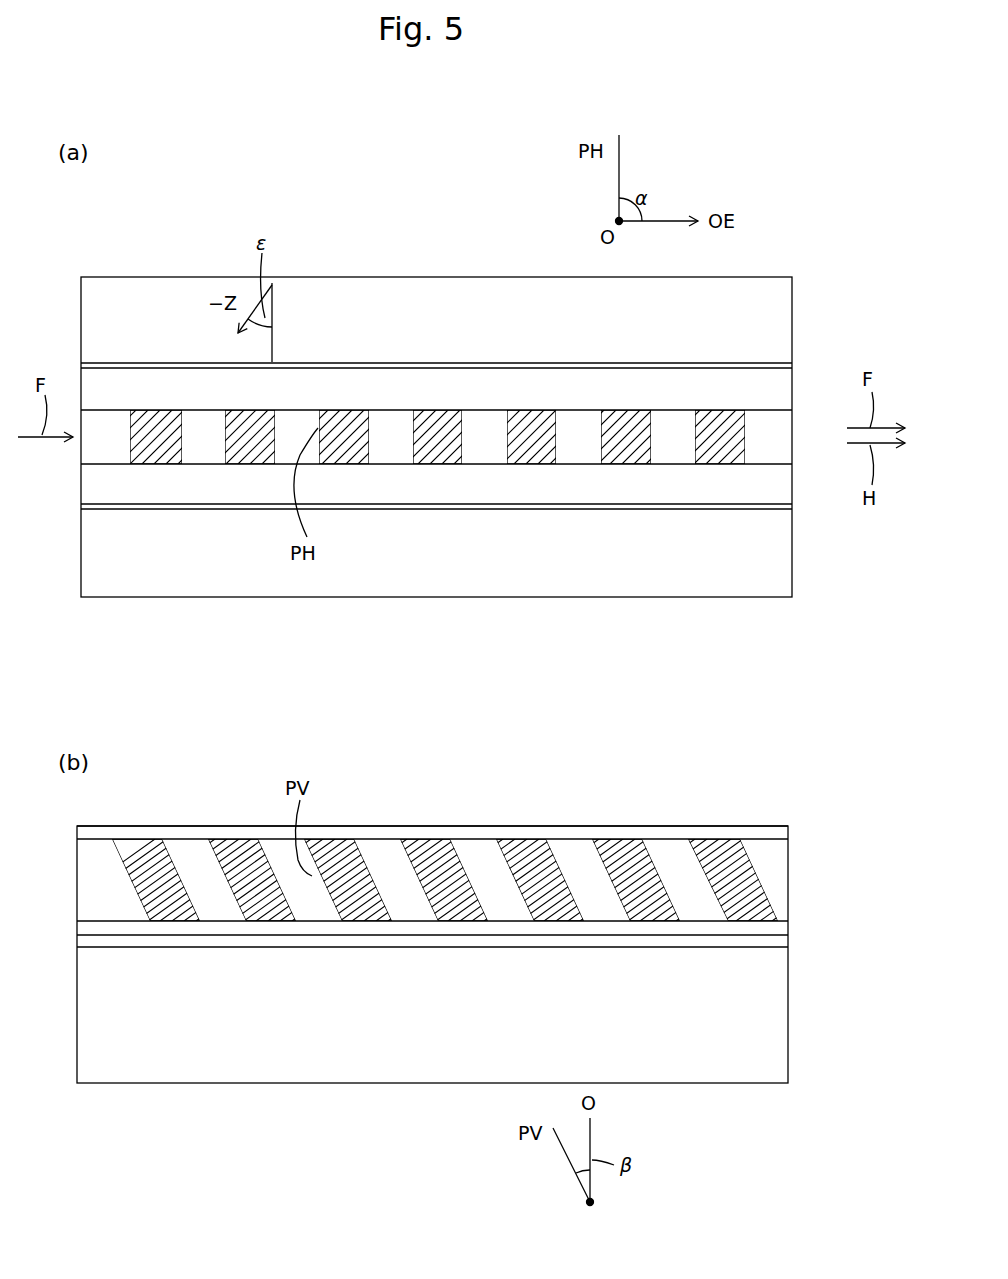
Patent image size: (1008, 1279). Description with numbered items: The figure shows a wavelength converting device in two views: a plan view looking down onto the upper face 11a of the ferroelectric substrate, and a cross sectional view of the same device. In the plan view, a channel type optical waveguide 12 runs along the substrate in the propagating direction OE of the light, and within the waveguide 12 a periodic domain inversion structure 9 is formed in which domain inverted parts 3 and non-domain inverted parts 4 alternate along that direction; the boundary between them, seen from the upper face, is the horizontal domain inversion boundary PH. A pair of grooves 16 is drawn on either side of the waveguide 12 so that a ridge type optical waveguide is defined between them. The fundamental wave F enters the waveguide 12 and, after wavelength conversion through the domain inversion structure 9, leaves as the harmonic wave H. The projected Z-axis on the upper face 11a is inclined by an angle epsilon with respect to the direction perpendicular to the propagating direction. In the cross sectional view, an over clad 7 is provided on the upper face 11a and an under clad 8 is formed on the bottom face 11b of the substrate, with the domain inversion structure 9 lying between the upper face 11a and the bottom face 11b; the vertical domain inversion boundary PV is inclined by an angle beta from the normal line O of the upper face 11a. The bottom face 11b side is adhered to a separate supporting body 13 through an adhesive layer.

The domain inverted part 3 is at (430, 418).
The non-domain inverted part 4 is at (568, 418).
The over clad 7 is at (587, 834).
The under clad 8 is at (607, 928).
The periodic domain inversion structure 9 is at (675, 942).
The upper face 11a is at (765, 836).
The bottom face 11b is at (755, 922).
The channel type optical waveguide 12 is at (782, 430).
The supporting body 13 is at (770, 1030).
The groove 16 is at (722, 386).